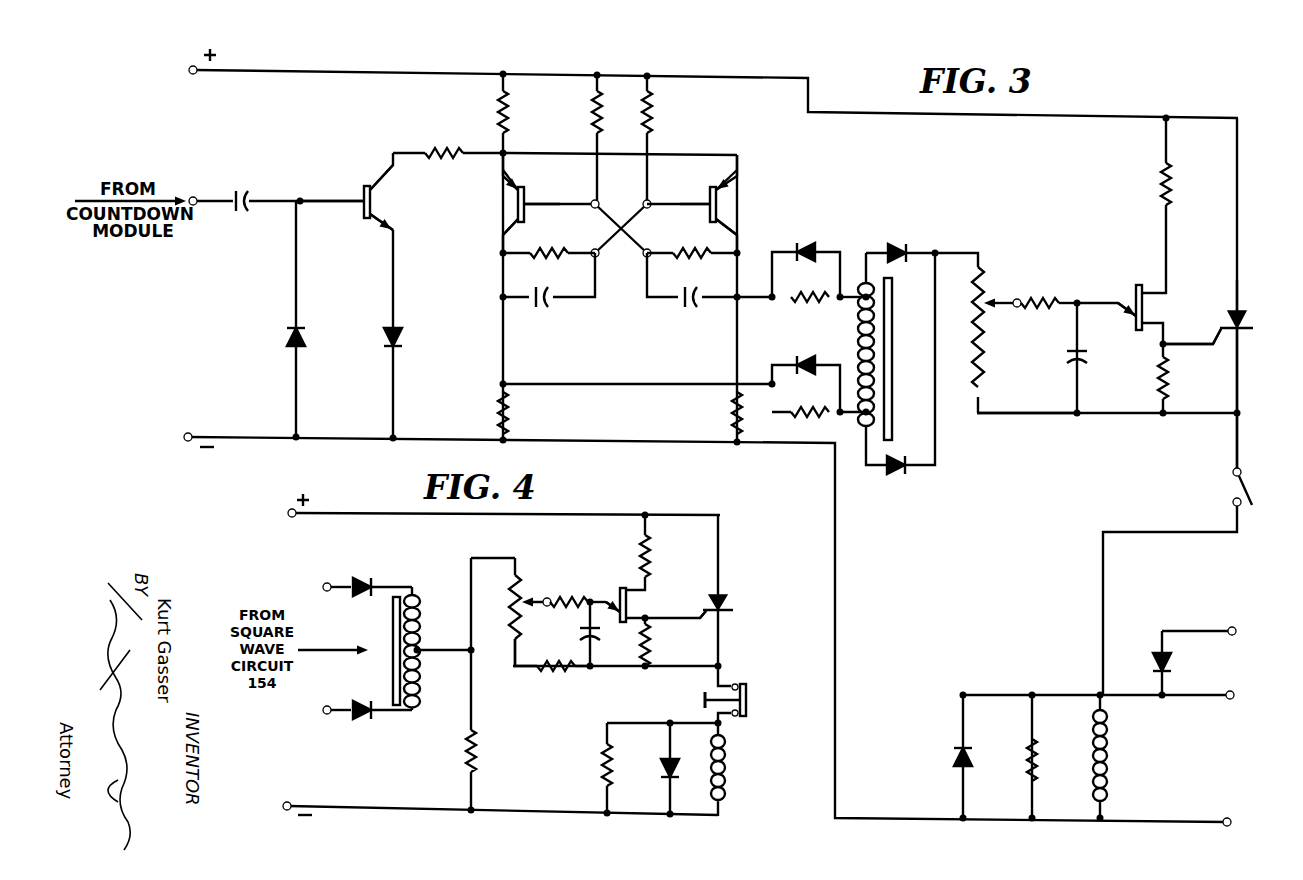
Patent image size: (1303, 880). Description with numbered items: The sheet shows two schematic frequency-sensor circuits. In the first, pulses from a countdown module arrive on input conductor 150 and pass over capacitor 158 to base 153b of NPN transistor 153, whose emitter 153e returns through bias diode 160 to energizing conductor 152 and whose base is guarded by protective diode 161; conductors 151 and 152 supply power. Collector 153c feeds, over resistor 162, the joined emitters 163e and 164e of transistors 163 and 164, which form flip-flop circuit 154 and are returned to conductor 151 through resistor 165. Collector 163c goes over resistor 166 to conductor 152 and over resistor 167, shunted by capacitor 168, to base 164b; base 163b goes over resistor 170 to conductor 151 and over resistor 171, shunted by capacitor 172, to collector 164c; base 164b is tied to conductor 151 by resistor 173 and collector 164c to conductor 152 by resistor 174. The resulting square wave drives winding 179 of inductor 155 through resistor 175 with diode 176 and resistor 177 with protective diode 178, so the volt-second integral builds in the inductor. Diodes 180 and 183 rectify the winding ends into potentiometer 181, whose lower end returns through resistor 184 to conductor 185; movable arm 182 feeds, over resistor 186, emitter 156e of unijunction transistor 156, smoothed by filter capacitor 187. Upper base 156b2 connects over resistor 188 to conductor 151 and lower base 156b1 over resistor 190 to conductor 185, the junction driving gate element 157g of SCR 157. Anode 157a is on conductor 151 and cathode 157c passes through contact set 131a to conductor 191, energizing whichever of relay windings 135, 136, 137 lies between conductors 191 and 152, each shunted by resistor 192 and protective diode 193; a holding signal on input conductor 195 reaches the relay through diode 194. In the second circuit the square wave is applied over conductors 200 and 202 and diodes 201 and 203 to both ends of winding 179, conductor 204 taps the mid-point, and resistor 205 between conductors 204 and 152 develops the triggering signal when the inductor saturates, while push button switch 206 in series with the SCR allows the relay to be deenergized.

In FIG. 3, the contact set 131a is at (1232, 492).
In FIG. 3, the relay winding 135 is at (1134, 756).
In FIG. 4, the relay winding 135 is at (754, 769).
In FIG. 3, the relay winding 136 is at (1100, 756).
In FIG. 4, the relay winding 136 is at (718, 769).
In FIG. 3, the relay winding 137 is at (1108, 752).
In FIG. 4, the relay winding 137 is at (725, 764).
In FIG. 3, the input conductor 150 is at (232, 197).
In FIG. 3, the energizing conductor 151 is at (296, 69).
In FIG. 4, the energizing conductor 151 is at (352, 512).
In FIG. 3, the energizing conductor 152 is at (232, 436).
In FIG. 4, the energizing conductor 152 is at (366, 810).
In FIG. 3, the first transistor 153 is at (386, 176).
In FIG. 3, the base 153b is at (366, 196).
In FIG. 3, the collector 153c is at (378, 160).
In FIG. 3, the emitter 153e is at (378, 232).
In FIG. 3, the flip-flop circuit 154 is at (643, 355).
In FIG. 3, the inductor 155 is at (925, 368).
In FIG. 4, the inductor 155 is at (426, 639).
In FIG. 3, the unijunction transistor 156 is at (1130, 290).
In FIG. 4, the unijunction transistor 156 is at (616, 596).
In FIG. 3, the lower base 156b1 is at (1154, 320).
In FIG. 4, the lower base 156b1 is at (642, 614).
In FIG. 3, the upper base 156b2 is at (1149, 290).
In FIG. 4, the upper base 156b2 is at (623, 586).
In FIG. 3, the emitter 156e is at (1127, 322).
In FIG. 4, the emitter 156e is at (612, 608).
In FIG. 3, the SCR 157 is at (1250, 298).
In FIG. 3, the anode 157a is at (1247, 318).
In FIG. 4, the anode 157a is at (728, 596).
In FIG. 3, the cathode 157c is at (1243, 332).
In FIG. 4, the cathode 157c is at (731, 611).
In FIG. 3, the gate element 157g is at (1222, 342).
In FIG. 4, the gate element 157g is at (726, 622).
In FIG. 3, the capacitor 158 is at (244, 212).
In FIG. 3, the bias diode 160 is at (384, 337).
In FIG. 3, the protective diode 161 is at (287, 337).
In FIG. 3, the resistor 162 is at (447, 148).
In FIG. 3, the transistor 163 is at (532, 190).
In FIG. 3, the base 163b is at (515, 204).
In FIG. 3, the collector 163c is at (510, 220).
In FIG. 3, the emitter 163e is at (512, 190).
In FIG. 3, the transistor 164 is at (704, 192).
In FIG. 3, the base 164b is at (720, 204).
In FIG. 3, the collector 164c is at (726, 224).
In FIG. 3, the emitter 164e is at (724, 188).
In FIG. 3, the resistor 165 is at (508, 112).
In FIG. 3, the resistor 166 is at (508, 414).
In FIG. 3, the resistor 167 is at (541, 248).
In FIG. 3, the capacitor 168 is at (545, 309).
In FIG. 3, the resistor 170 is at (592, 118).
In FIG. 3, the resistor 171 is at (694, 248).
In FIG. 3, the capacitor 172 is at (694, 309).
In FIG. 3, the resistor 173 is at (655, 118).
In FIG. 3, the resistor 174 is at (730, 414).
In FIG. 3, the resistor 175 is at (808, 247).
In FIG. 3, the diode 176 is at (801, 303).
In FIG. 3, the resistor 177 is at (812, 418).
In FIG. 3, the protective diode 178 is at (808, 373).
In FIG. 3, the winding 179 is at (857, 362).
In FIG. 4, the winding 179 is at (421, 610).
In FIG. 3, the diode 180 is at (898, 244).
In FIG. 3, the potentiometer 181 is at (972, 290).
In FIG. 4, the potentiometer 181 is at (512, 640).
In FIG. 3, the movable arm 182 is at (1014, 297).
In FIG. 4, the movable arm 182 is at (519, 590).
In FIG. 3, the diode 183 is at (896, 474).
In FIG. 3, the resistor 184 is at (985, 372).
In FIG. 4, the resistor 184 is at (556, 672).
In FIG. 3, the conductor 185 is at (1028, 416).
In FIG. 4, the conductor 185 is at (614, 670).
In FIG. 3, the resistor 186 is at (1040, 297).
In FIG. 4, the resistor 186 is at (568, 618).
In FIG. 3, the filter capacitor 187 is at (1070, 362).
In FIG. 4, the filter capacitor 187 is at (598, 636).
In FIG. 3, the resistor 188 is at (1161, 178).
In FIG. 4, the resistor 188 is at (650, 556).
In FIG. 3, the resistor 190 is at (1157, 383).
In FIG. 4, the resistor 190 is at (652, 646).
In FIG. 3, the conductor 191 is at (1052, 692).
In FIG. 3, the resistor 192 is at (1026, 752).
In FIG. 4, the resistor 192 is at (600, 762).
In FIG. 3, the protective diode 193 is at (955, 756).
In FIG. 4, the protective diode 193 is at (660, 766).
In FIG. 3, the diode 194 is at (1170, 660).
In FIG. 3, the input conductor 195 is at (1210, 630).
In FIG. 4, the conductor 200 is at (338, 584).
In FIG. 4, the diode 201 is at (366, 580).
In FIG. 4, the conductor 202 is at (334, 714).
In FIG. 4, the diode 203 is at (366, 718).
In FIG. 4, the conductor 204 is at (494, 557).
In FIG. 4, the resistor 205 is at (478, 752).
In FIG. 4, the push button switch 206 is at (743, 678).